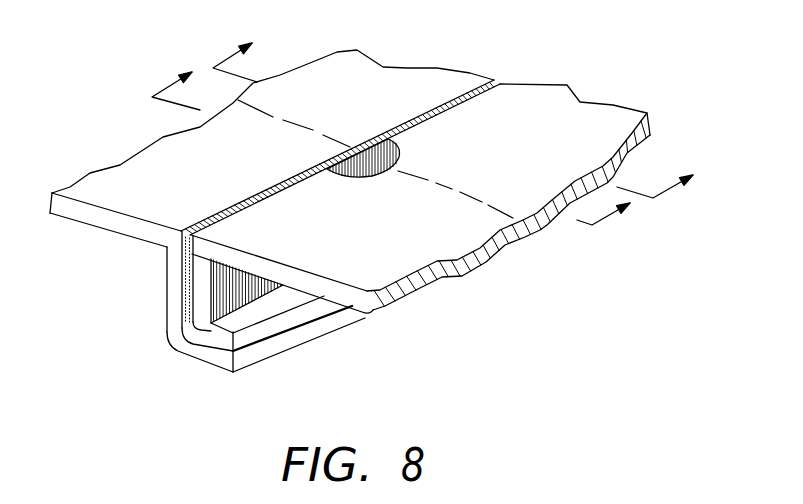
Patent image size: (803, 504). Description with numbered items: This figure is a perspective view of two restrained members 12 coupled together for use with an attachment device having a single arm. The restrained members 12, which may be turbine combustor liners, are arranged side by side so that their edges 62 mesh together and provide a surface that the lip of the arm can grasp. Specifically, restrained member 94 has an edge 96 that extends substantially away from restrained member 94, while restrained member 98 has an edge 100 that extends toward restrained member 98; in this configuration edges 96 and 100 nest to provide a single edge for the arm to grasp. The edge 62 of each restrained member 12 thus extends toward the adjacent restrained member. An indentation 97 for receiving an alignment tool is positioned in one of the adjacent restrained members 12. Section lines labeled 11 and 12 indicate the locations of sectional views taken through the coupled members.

The section line 11- 11 is at (404, 145).
The restrained member 12 is at (469, 108).
The edge 62 is at (255, 353).
The restrained member 94 is at (165, 289).
The edge 96 is at (240, 373).
The indentation 97 is at (403, 151).
The restrained member 98 is at (432, 242).
The edge 100 is at (298, 307).